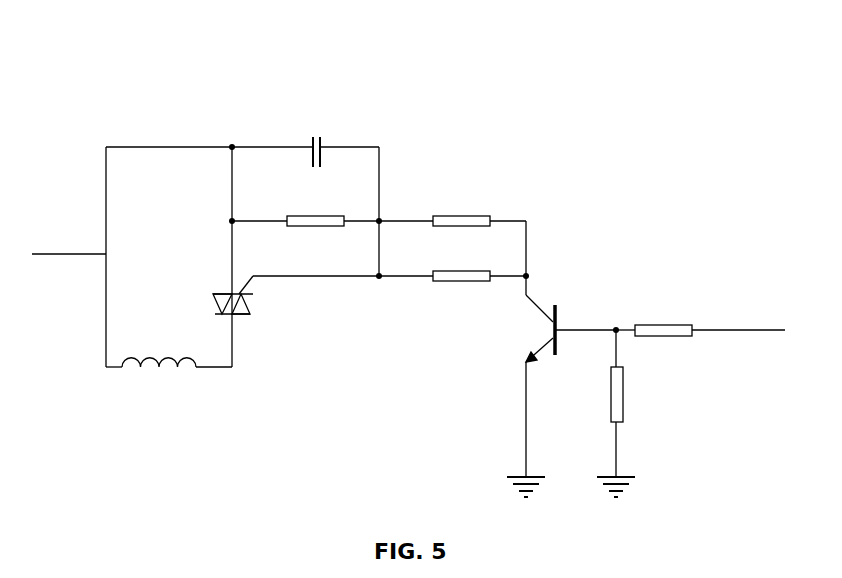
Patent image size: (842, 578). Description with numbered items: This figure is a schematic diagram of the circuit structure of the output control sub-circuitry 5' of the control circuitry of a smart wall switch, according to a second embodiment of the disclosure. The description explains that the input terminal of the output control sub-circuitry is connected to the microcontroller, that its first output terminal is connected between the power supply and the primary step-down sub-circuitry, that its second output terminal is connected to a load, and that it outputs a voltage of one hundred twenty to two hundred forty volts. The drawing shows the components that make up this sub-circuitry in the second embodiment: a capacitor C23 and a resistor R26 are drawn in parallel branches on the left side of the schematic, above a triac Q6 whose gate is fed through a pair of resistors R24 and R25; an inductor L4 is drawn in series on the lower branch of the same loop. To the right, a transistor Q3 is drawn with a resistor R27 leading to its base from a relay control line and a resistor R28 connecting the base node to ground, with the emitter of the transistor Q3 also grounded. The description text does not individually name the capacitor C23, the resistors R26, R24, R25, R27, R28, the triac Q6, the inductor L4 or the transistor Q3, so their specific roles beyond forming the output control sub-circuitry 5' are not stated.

The output control sub-circuitry 5' is at (408, 258).
The capacitor C23 is at (324, 160).
The resistor R26 is at (315, 223).
The resistor R24 is at (467, 213).
The resistor R25 is at (467, 268).
The triac Q6 is at (266, 305).
The inductor L4 is at (153, 371).
The transistor Q3 is at (571, 386).
The resistor R27 is at (700, 333).
The resistor R28 is at (630, 403).